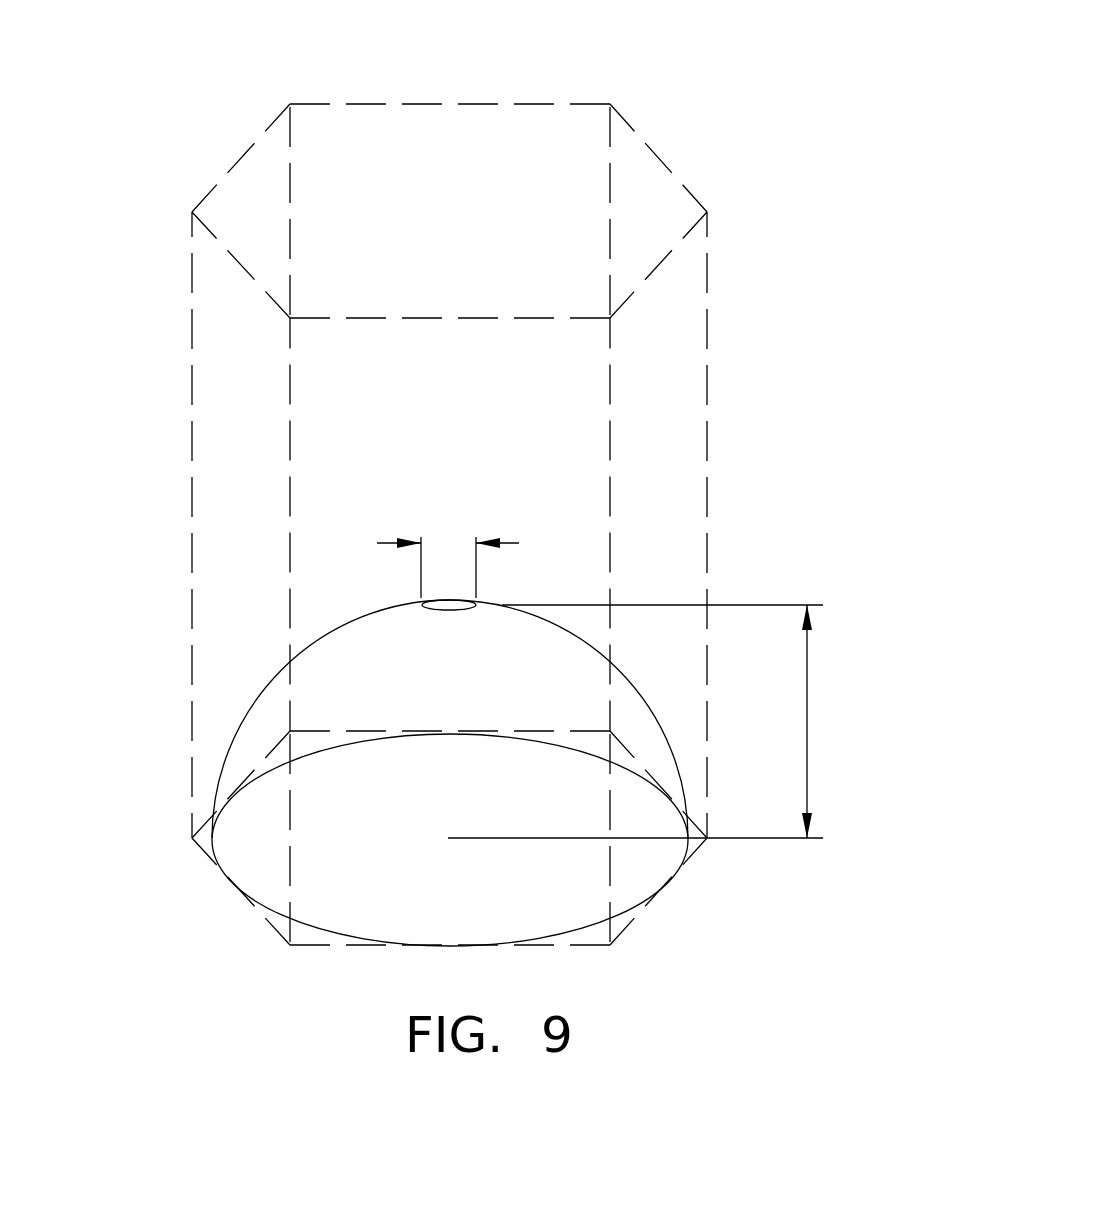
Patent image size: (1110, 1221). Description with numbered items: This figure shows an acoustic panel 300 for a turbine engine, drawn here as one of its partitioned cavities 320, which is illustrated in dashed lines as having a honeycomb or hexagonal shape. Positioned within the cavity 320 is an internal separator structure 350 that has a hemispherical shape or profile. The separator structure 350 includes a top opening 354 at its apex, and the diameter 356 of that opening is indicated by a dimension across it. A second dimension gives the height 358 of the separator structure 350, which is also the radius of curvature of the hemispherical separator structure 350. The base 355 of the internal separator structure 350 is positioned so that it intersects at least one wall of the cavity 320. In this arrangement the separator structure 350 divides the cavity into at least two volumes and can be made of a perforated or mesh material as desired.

The acoustic panel 300 is at (673, 132).
The partitioned cavity 320 is at (222, 307).
The internal separator structure 350 is at (308, 648).
The top opening 354 is at (443, 600).
The base 355 is at (263, 907).
The diameter 356 is at (505, 543).
The height 358 is at (808, 720).